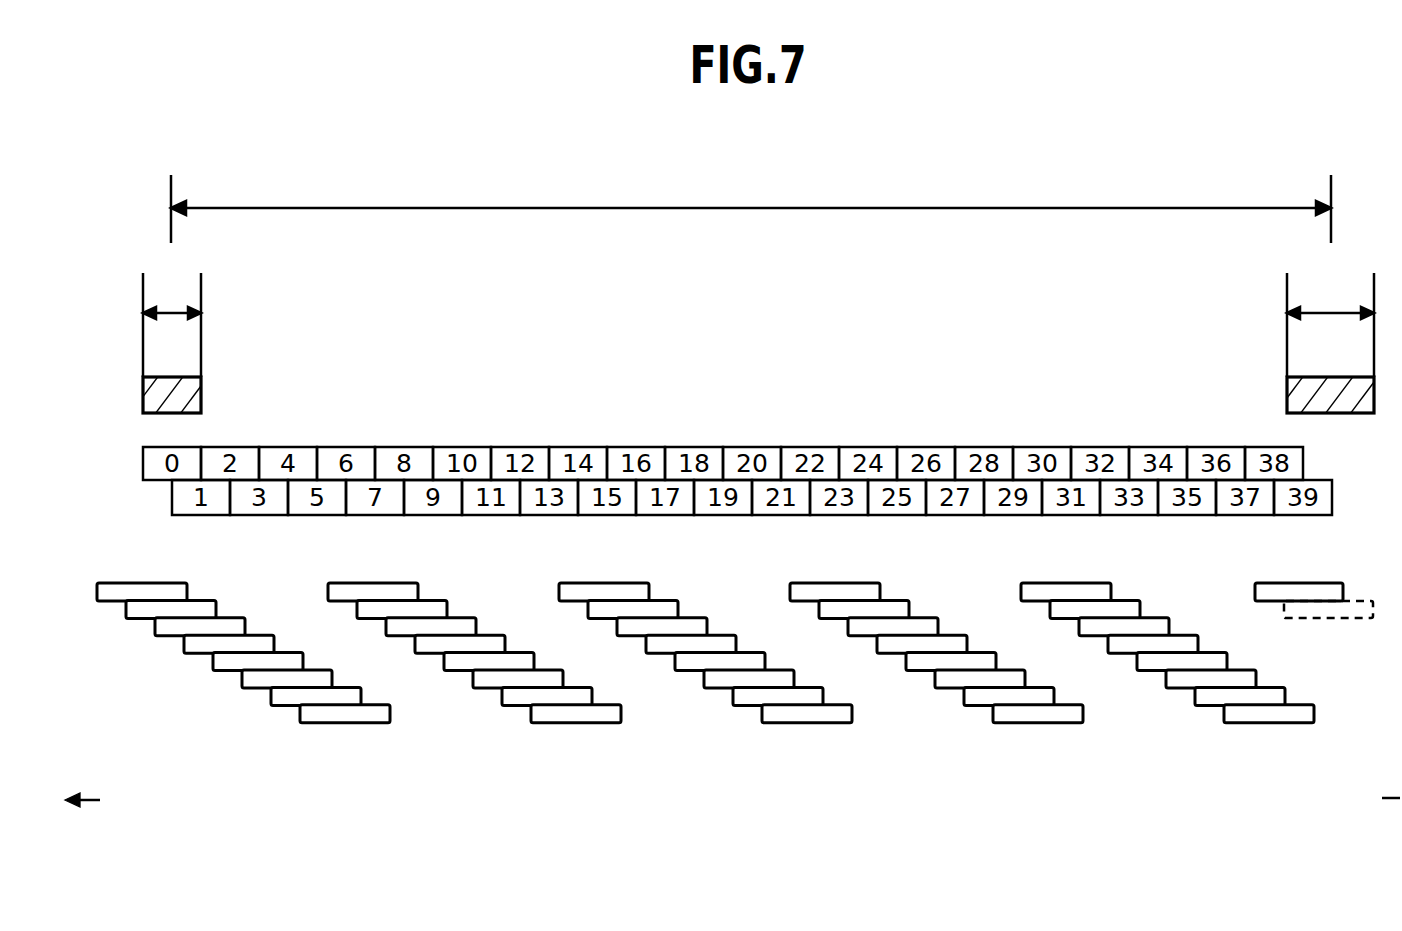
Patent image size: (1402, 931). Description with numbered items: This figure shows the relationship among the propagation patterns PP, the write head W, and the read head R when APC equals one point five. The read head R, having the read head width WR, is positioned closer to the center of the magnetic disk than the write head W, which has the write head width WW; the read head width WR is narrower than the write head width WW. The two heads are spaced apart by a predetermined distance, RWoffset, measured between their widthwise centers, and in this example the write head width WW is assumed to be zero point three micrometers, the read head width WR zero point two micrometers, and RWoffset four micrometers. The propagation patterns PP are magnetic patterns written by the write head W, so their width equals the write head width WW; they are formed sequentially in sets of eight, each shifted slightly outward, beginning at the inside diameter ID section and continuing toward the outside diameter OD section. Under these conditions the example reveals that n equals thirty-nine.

The read head R is at (201, 387).
The write head W is at (1287, 387).
The read head width WR is at (172, 325).
The write head width WW is at (1330, 325).
The element RWoffset is at (751, 205).
The propagation patterns PP is at (350, 723).
The inside diameter ID is at (98, 802).
The outside diameter OD is at (1370, 800).